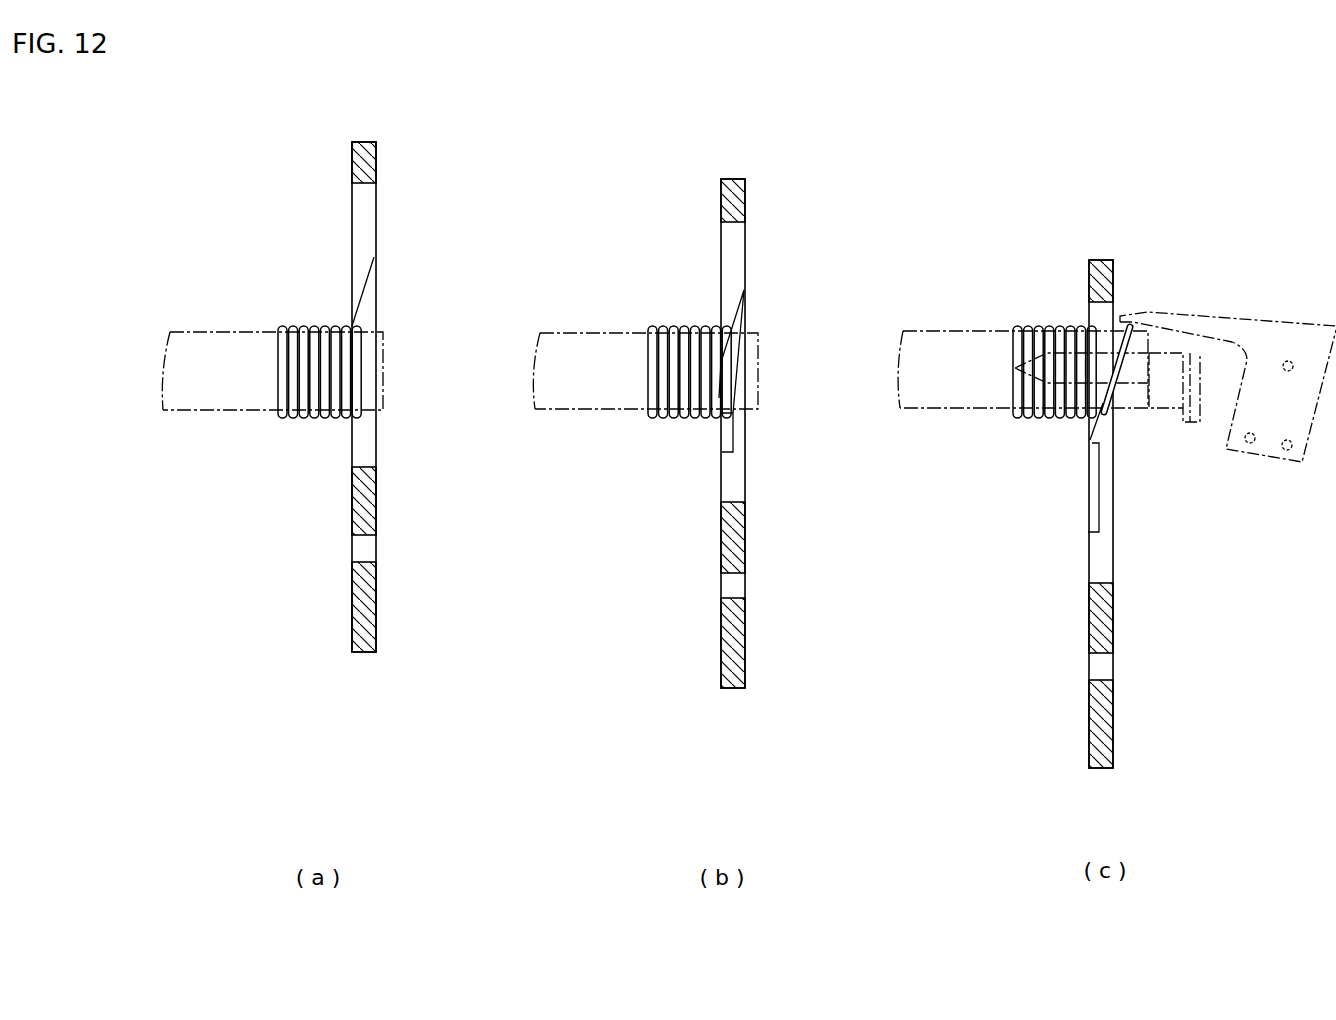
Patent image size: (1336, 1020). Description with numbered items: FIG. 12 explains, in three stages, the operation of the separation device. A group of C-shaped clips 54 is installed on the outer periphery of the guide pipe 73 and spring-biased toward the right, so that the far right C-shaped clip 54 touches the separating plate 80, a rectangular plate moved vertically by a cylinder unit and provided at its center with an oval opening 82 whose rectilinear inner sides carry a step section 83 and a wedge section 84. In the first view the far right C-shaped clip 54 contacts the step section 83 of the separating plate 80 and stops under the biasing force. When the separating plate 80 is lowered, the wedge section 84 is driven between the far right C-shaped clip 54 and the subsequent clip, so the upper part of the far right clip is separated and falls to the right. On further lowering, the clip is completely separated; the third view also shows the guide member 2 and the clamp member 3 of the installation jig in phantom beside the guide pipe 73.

The guide member 2 is at (1162, 368).
The clamp member 3 is at (1282, 326).
The C-shaped clip 54 is at (293, 340).
The guide pipe 73 is at (205, 342).
The separating plate 80 is at (367, 165).
The opening 82 is at (365, 468).
The step section 83 is at (360, 382).
The wedge section 84 is at (368, 285).